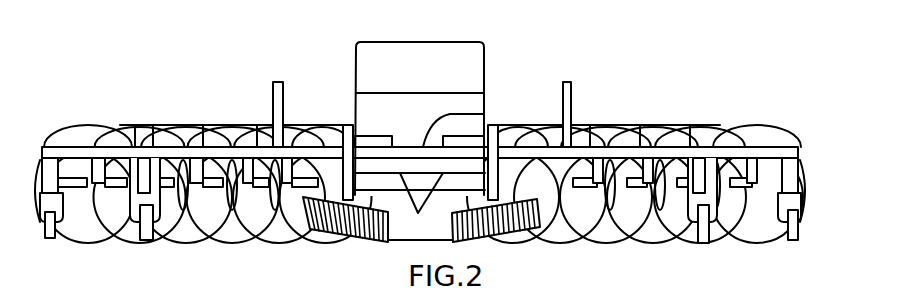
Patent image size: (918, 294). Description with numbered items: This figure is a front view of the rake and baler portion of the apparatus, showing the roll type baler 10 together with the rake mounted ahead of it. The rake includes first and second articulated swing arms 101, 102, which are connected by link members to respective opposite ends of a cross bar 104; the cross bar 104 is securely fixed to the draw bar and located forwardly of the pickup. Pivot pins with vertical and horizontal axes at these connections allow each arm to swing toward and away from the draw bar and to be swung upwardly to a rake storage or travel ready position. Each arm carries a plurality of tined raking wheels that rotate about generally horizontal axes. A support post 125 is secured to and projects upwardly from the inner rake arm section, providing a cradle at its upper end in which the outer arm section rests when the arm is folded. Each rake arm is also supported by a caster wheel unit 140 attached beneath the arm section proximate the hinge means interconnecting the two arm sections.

The roll type baler 10 is at (527, 67).
The first articulated swing arm 101 is at (683, 93).
The second articulated swing arm 102 is at (150, 97).
The cross bar 104 is at (484, 117).
The support post 125 is at (285, 110).
The caster wheel unit 140 is at (704, 241).